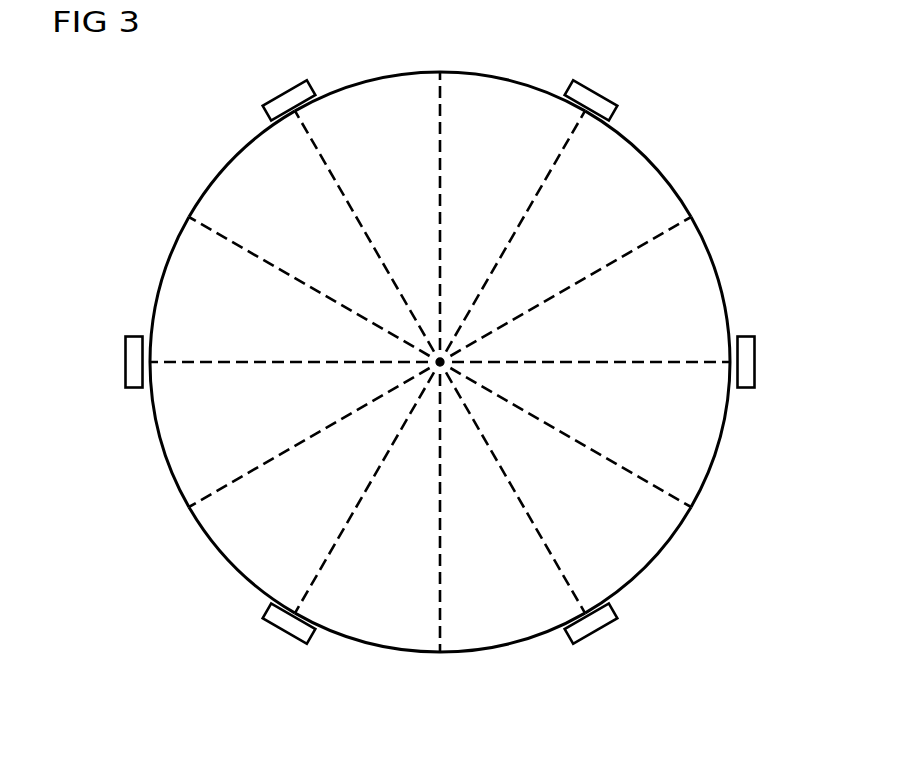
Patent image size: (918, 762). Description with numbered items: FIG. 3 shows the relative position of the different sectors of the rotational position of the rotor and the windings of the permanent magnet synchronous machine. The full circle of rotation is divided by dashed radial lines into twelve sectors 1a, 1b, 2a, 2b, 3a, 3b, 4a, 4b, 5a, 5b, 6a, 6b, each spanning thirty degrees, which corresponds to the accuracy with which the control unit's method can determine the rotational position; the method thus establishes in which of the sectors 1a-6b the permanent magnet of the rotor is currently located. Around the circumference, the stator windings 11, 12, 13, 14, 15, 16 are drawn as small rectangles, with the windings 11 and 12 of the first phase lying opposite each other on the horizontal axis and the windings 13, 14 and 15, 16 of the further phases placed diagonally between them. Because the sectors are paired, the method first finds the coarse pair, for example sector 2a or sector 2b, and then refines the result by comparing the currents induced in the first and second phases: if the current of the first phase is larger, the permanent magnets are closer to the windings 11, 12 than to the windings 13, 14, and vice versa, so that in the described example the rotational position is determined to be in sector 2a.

The sector 1a is at (710, 427).
The sector 1b is at (710, 298).
The sector 2a is at (632, 167).
The sector 2b is at (511, 83).
The sector 3a is at (381, 83).
The sector 3b is at (248, 167).
The sector 4a is at (170, 298).
The sector 4b is at (170, 427).
The sector 5a is at (252, 556).
The sector 5b is at (381, 641).
The sector 6a is at (511, 641).
The sector 6b is at (628, 556).
The winding 11 is at (757, 362).
The winding 12 is at (123, 362).
The winding 13 is at (283, 85).
The winding 14 is at (597, 645).
The winding 15 is at (283, 645).
The winding 16 is at (597, 85).